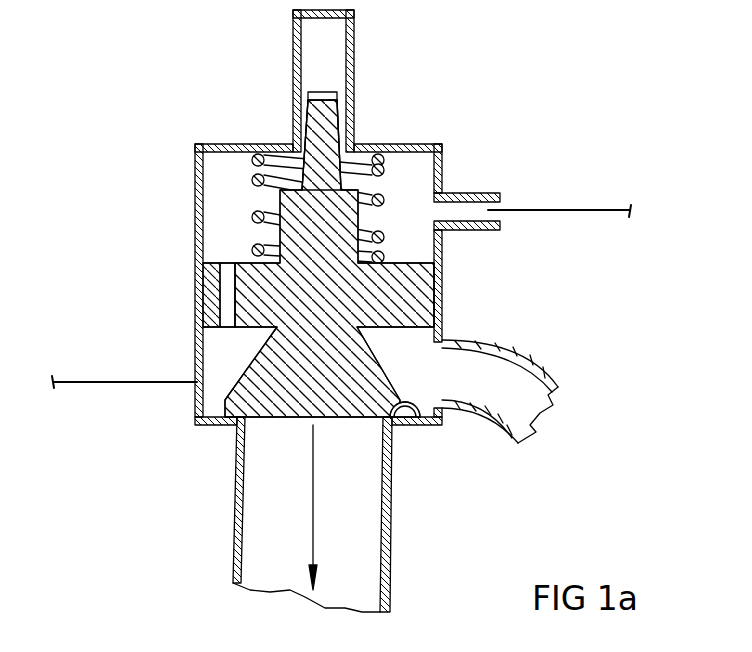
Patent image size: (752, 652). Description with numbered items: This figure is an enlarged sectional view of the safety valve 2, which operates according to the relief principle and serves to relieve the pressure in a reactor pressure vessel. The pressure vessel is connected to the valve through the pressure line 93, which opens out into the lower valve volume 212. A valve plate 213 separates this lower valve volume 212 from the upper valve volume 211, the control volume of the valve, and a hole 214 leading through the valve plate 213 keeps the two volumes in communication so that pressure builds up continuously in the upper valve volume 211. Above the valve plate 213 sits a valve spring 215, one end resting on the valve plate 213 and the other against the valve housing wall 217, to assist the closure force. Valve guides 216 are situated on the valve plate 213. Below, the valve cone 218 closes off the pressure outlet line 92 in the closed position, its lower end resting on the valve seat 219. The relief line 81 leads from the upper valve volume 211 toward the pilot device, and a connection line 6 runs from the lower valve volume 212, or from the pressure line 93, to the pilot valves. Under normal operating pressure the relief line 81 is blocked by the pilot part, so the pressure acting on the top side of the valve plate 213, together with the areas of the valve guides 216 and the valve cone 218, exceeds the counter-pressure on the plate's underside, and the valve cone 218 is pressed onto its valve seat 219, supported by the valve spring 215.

The safety valve 2 is at (177, 114).
The connection line 6 is at (97, 380).
The relief line 81 is at (607, 210).
The pressure outlet line 92 is at (253, 558).
The pressure line 93 is at (528, 408).
The upper valve volume 211 is at (215, 182).
The lower valve volume 212 is at (215, 405).
The valve plate 213 is at (410, 297).
The hole 214 is at (225, 297).
The valve spring 215 is at (380, 172).
The valve guides 216 is at (327, 117).
The valve housing wall 217 is at (227, 142).
The valve cone 218 is at (233, 426).
The valve seat 219 is at (412, 422).